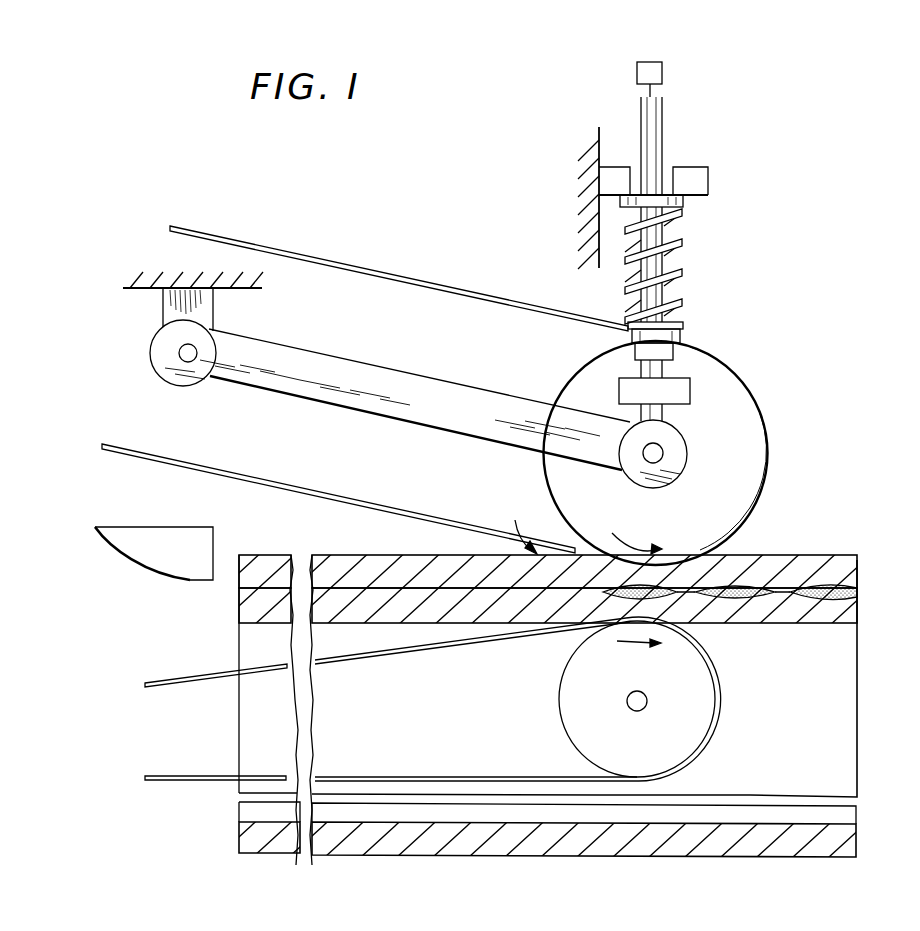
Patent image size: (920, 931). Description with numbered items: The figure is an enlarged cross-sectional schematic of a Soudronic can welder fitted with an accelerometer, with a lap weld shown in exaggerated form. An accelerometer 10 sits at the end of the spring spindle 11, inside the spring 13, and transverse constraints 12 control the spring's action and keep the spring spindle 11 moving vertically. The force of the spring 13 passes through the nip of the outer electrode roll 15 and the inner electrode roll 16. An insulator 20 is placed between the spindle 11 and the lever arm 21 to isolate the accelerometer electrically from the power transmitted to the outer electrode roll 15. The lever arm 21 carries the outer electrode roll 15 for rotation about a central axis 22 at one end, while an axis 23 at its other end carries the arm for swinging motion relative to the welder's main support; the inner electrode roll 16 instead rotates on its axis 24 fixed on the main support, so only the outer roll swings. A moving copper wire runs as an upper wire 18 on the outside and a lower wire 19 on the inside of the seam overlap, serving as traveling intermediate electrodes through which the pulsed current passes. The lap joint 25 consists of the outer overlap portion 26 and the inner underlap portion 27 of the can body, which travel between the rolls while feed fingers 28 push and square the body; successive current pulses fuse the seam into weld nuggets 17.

The accelerometer 10 is at (664, 72).
The spring spindle 11 is at (664, 111).
The transverse constraints 12 is at (708, 195).
The spring 13 is at (684, 243).
The outer electrode roll 15 is at (545, 492).
The inner electrode roll 16 is at (559, 703).
The weld nugget 17 is at (748, 582).
The upper copper wire 18 is at (148, 449).
The lower copper wire 19 is at (190, 688).
The insulator 20 is at (690, 381).
The lever arm 21 is at (458, 393).
The central axis 22 is at (660, 460).
The axis 23 is at (190, 362).
The axis 24 is at (627, 704).
The lap joint 25 is at (530, 532).
The outer overlap portion 26 is at (470, 556).
The inner underlap portion 27 is at (420, 629).
The feed fingers 28 is at (197, 530).